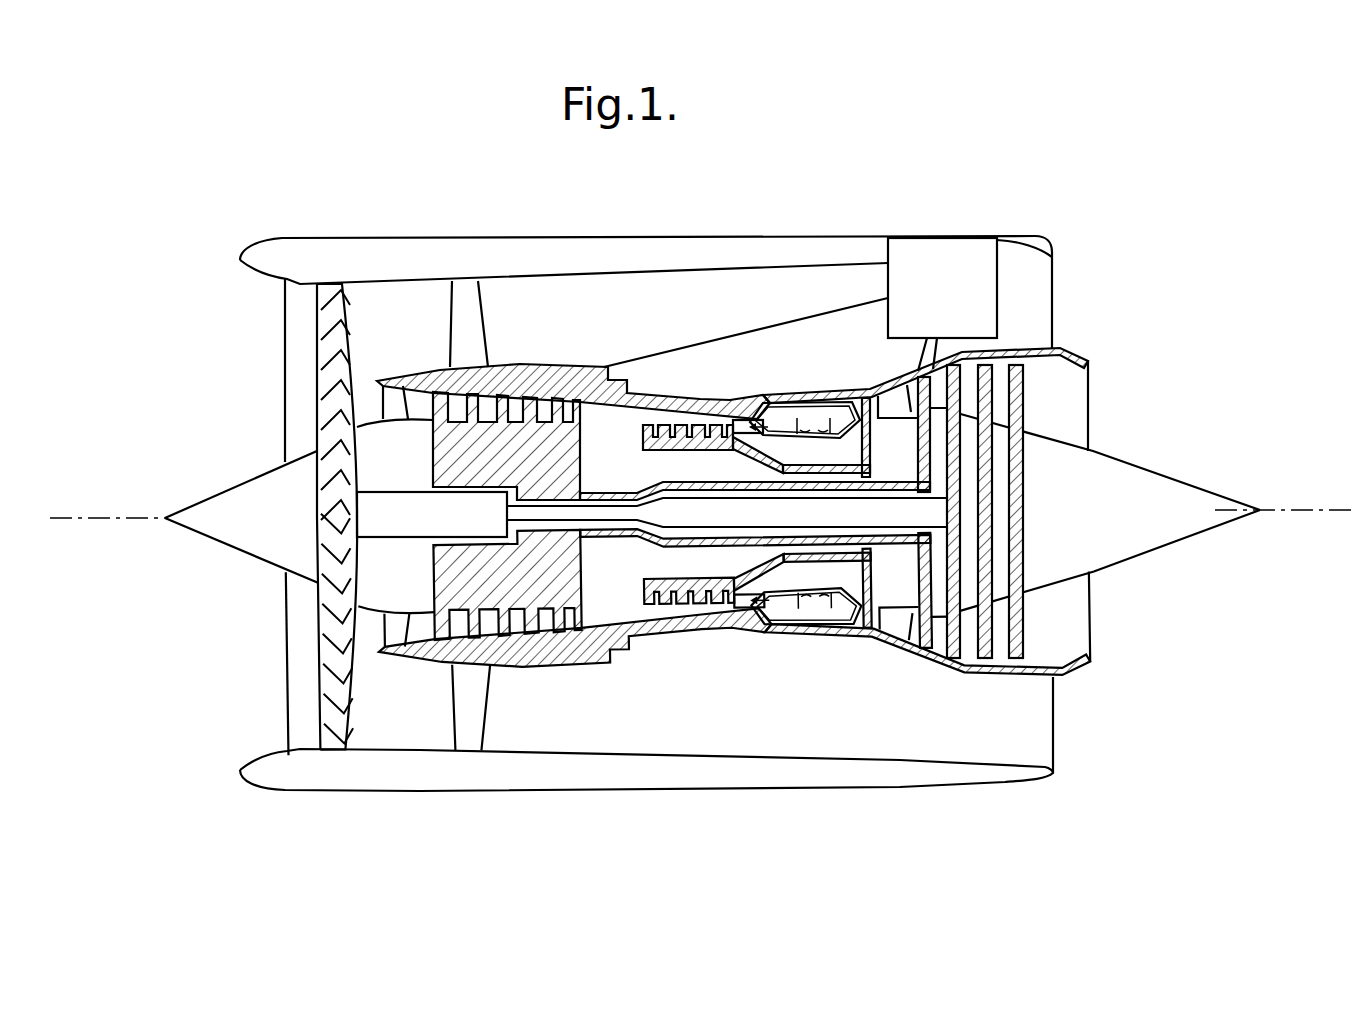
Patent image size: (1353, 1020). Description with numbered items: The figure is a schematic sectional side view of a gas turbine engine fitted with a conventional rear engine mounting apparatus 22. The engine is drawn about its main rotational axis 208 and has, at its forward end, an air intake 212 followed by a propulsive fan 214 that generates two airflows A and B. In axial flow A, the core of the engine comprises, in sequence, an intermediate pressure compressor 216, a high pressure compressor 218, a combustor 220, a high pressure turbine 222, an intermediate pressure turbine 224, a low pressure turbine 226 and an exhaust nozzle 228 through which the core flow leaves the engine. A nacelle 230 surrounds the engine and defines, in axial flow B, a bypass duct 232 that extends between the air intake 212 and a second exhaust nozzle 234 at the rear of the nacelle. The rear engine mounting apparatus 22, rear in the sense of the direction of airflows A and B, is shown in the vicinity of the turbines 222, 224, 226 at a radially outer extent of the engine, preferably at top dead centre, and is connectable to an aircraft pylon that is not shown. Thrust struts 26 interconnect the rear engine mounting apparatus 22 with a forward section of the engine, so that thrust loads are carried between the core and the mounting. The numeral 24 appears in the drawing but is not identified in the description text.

The rear engine mounting apparatus 22 is at (983, 297).
The gas turbine engine 24 is at (237, 234).
The thrust struts 26 is at (733, 335).
The main rotational axis 208 is at (122, 517).
The air intake 212 is at (293, 302).
The propulsive fan 214 is at (328, 297).
The intermediate pressure compressor 216 is at (530, 447).
The high pressure compressor 218 is at (675, 606).
The combustor 220 is at (803, 607).
The high pressure turbine 222 is at (863, 622).
The intermediate pressure turbine 224 is at (919, 641).
The low pressure turbine 226 is at (1023, 641).
The exhaust nozzle 228 is at (1070, 407).
The nacelle 230 is at (435, 271).
The bypass duct 232 is at (648, 324).
The exhaust nozzle 234 is at (1030, 735).
The axial flow A is at (388, 402).
The axial flow B is at (378, 327).